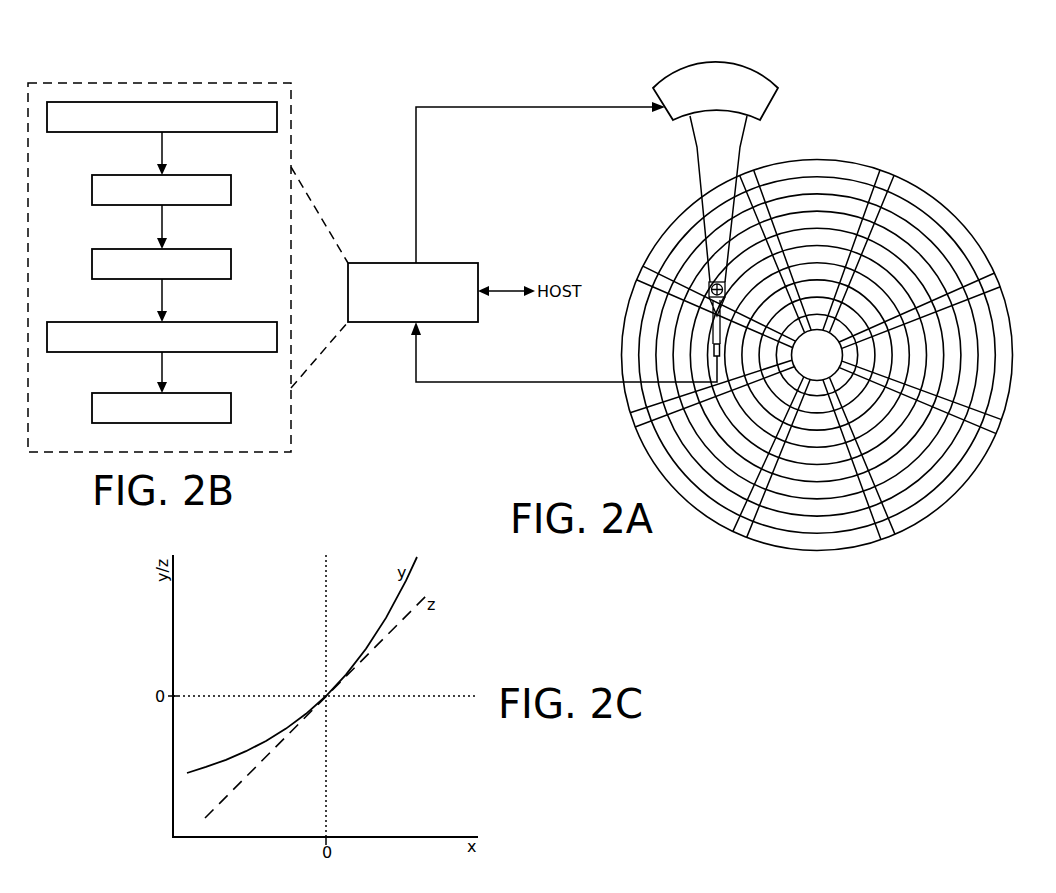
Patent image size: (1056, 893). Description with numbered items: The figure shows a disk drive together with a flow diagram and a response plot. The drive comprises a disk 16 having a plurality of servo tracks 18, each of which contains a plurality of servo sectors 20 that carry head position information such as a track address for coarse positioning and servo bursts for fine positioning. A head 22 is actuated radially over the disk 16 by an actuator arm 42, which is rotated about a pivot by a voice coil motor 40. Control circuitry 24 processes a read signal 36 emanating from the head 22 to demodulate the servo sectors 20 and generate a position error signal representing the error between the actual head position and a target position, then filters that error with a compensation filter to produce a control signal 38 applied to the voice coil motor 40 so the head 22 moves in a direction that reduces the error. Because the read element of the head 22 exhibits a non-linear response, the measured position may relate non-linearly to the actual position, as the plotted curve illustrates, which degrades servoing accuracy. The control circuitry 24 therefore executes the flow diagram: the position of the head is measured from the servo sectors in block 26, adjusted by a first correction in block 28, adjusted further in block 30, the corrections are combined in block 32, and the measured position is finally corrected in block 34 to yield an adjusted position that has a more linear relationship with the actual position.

In FIG. 2A, the disk 16 is at (957, 200).
In FIG. 2A, the servo tracks 18 is at (818, 183).
In FIG. 2A, the servo sectors 20 is at (822, 360).
In FIG. 2A, the head 22 is at (700, 361).
In FIG. 2A, the control circuitry 24 is at (449, 262).
In FIG. 2B, the block 26 is at (230, 132).
In FIG. 2B, the block 28 is at (213, 205).
In FIG. 2B, the block 30 is at (213, 279).
In FIG. 2B, the block 32 is at (233, 352).
In FIG. 2B, the block 34 is at (213, 423).
In FIG. 2A, the read signal 36 is at (532, 383).
In FIG. 2A, the control signal 38 is at (416, 170).
In FIG. 2A, the voice coil motor 40 is at (668, 119).
In FIG. 2A, the actuator arm 42 is at (699, 170).